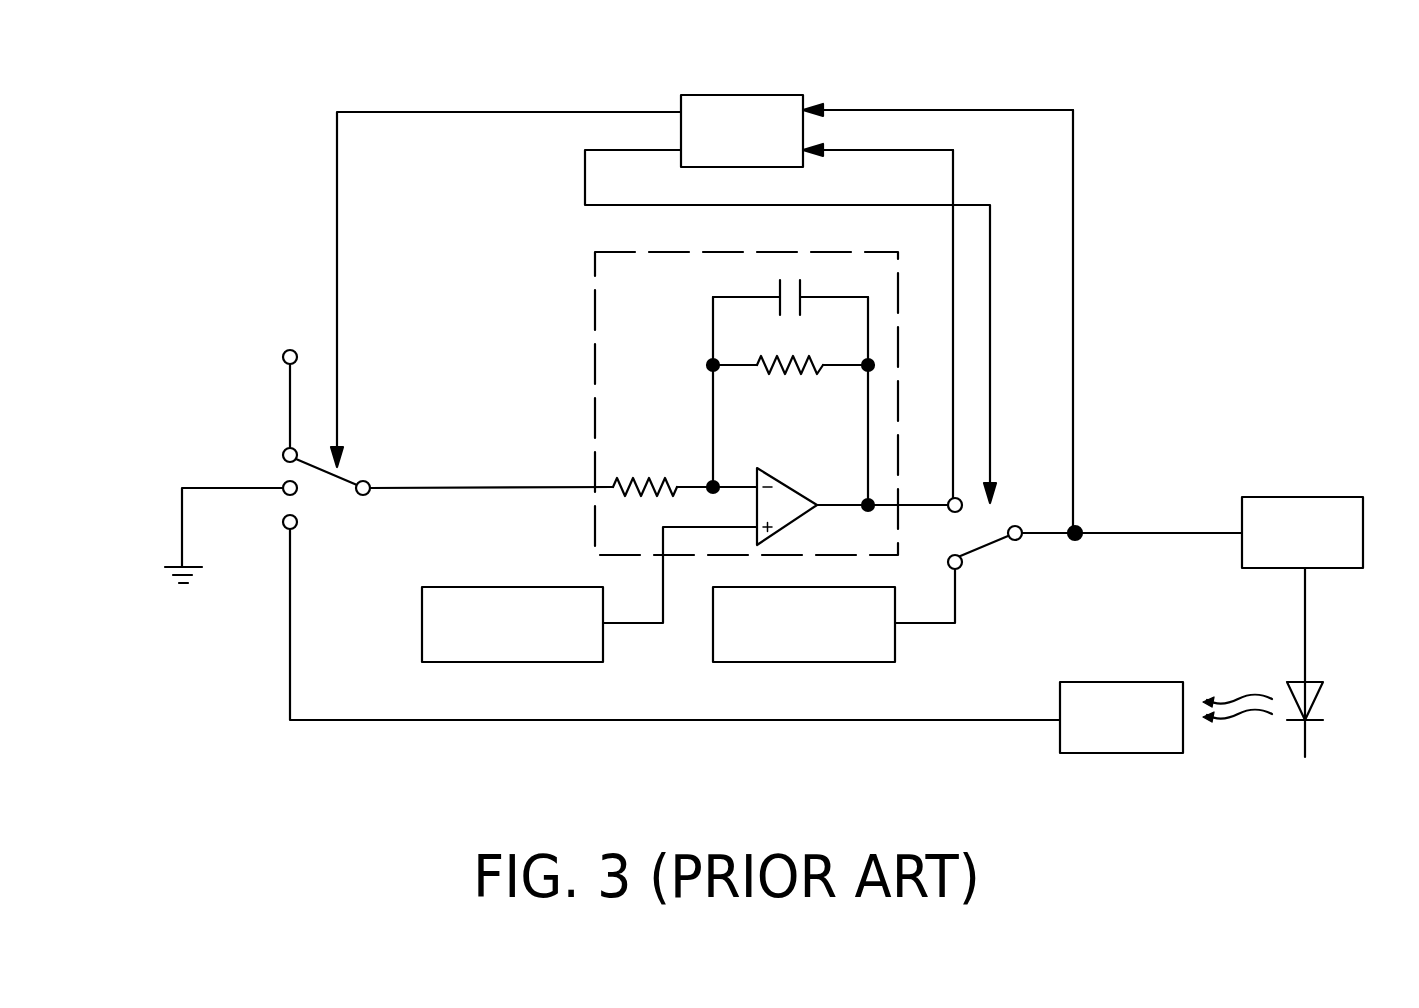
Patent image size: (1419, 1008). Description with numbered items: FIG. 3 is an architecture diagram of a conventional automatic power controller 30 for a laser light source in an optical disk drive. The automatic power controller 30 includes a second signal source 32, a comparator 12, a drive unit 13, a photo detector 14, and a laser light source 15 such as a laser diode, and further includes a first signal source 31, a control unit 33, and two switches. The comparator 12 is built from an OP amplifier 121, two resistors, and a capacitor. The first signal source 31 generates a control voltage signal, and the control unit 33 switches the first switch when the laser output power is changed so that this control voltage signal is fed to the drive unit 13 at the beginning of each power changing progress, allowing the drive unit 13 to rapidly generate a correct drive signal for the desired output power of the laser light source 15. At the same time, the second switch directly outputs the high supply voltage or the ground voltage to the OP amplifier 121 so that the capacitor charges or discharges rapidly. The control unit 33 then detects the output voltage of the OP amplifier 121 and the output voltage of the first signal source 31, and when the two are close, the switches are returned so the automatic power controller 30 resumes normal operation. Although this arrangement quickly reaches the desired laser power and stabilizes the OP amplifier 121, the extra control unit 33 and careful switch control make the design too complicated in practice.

The automatic power controller 30 is at (240, 128).
The control unit 33 is at (738, 95).
The comparator 12 is at (620, 347).
The OP amplifier 121 is at (795, 500).
The drive unit 13 is at (1300, 497).
The laser light source 15 is at (1325, 708).
The photo detector 14 is at (1120, 753).
The second signal source 32 is at (505, 662).
The first signal source 31 is at (808, 662).